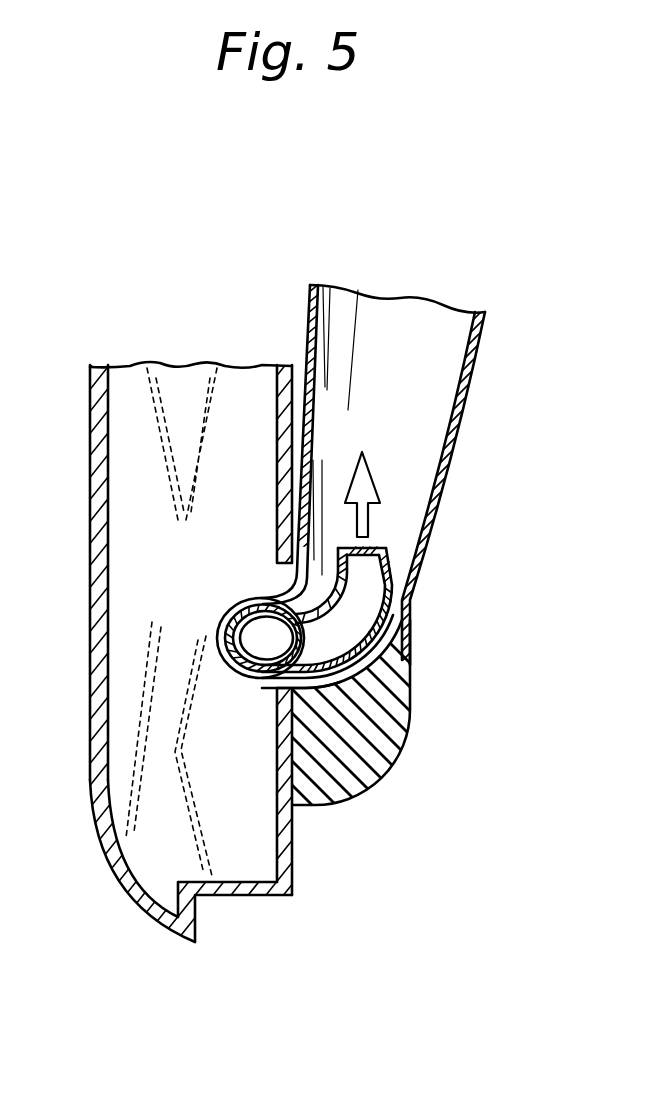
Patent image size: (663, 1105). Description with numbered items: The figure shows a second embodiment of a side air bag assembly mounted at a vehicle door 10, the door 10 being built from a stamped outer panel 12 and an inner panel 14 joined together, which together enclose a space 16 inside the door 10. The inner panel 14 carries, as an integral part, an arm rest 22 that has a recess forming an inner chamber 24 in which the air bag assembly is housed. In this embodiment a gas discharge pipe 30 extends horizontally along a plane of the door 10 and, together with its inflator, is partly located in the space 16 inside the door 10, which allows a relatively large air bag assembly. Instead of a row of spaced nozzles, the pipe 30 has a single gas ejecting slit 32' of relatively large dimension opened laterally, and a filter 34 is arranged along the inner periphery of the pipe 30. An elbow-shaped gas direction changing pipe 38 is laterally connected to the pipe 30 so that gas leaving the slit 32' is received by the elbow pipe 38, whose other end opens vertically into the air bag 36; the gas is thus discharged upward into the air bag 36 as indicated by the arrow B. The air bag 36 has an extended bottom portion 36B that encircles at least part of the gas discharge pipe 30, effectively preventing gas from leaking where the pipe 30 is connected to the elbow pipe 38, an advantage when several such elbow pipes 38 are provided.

The door 10 is at (193, 657).
The outer panel 12 is at (100, 856).
The inner panel 14 is at (298, 862).
The space 16 is at (153, 879).
The arm rest 22 is at (385, 744).
The inner chamber 24 is at (385, 648).
The gas discharge pipe 30 is at (236, 665).
The gas ejecting slit 32' is at (372, 610).
The filter 34 is at (217, 637).
The air bag 36 is at (474, 367).
The extended bottom portion 36B is at (259, 683).
The gas direction changing pipe 38 is at (388, 548).
The arrow B is at (378, 494).